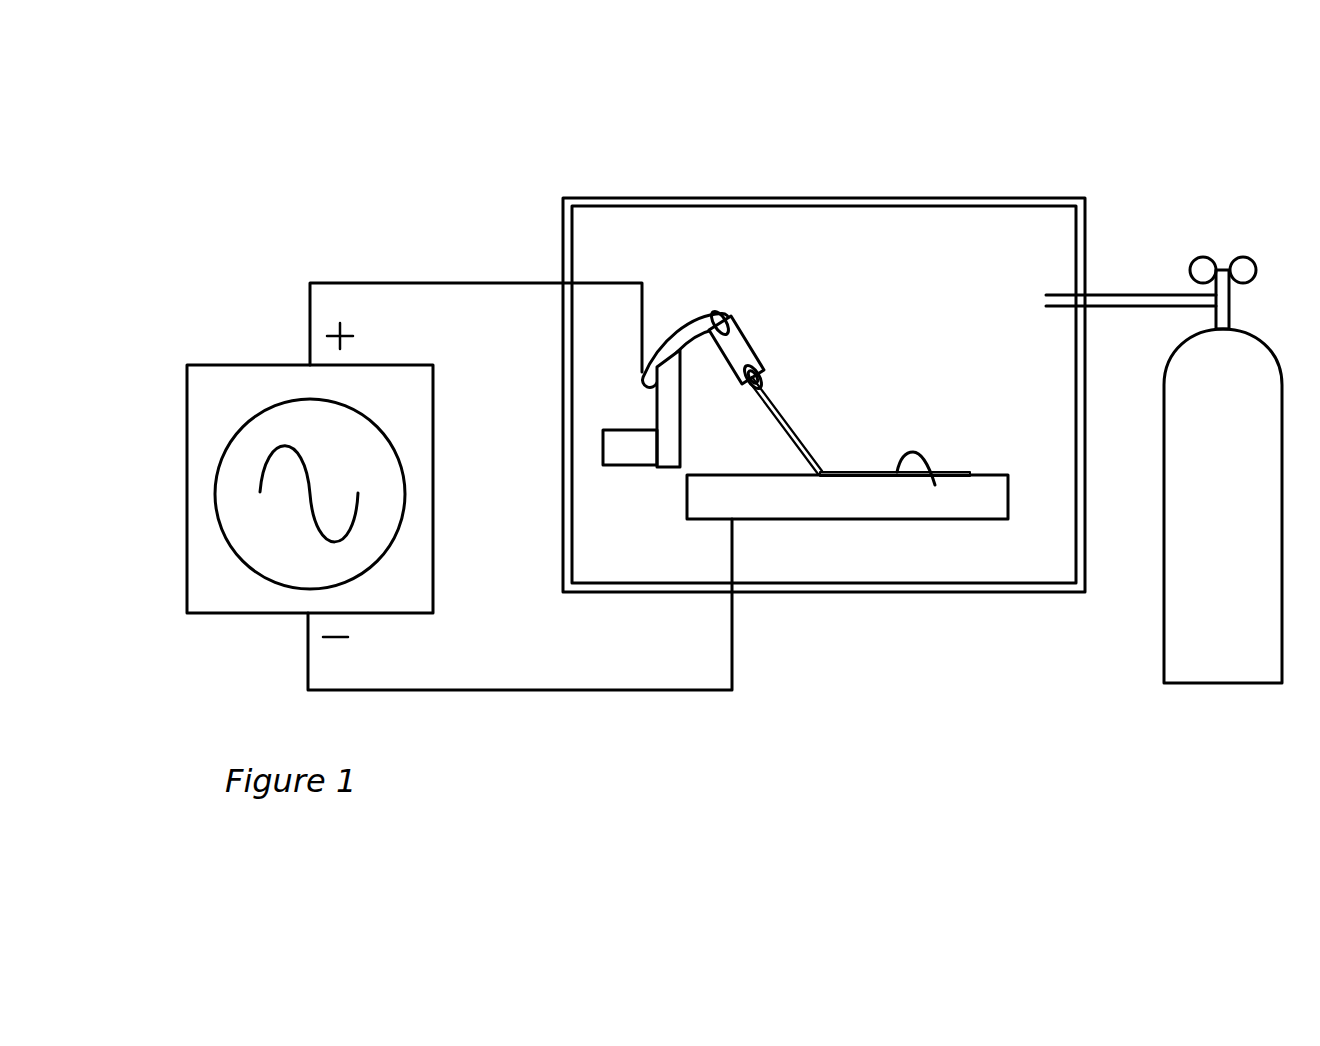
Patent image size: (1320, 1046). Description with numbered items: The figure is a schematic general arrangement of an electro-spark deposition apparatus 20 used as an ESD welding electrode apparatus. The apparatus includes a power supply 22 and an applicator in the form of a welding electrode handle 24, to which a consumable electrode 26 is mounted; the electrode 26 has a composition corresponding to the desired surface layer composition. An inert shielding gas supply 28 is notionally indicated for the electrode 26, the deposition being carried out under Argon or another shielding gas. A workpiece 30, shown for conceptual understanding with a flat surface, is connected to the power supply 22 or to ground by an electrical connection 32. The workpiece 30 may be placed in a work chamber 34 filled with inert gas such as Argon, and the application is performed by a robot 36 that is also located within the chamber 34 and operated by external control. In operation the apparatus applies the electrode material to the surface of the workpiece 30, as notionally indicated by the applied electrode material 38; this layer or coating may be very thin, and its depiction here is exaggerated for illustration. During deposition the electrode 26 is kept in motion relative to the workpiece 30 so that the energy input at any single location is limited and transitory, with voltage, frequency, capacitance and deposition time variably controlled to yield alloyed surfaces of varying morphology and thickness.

The electro-spark deposition apparatus 20 is at (322, 154).
The power supply 22 is at (270, 385).
The welding electrode handle 24 is at (700, 318).
The electrode 26 is at (787, 415).
The inert shielding gas supply 28 is at (1205, 589).
The workpiece 30 is at (858, 500).
The electrical connection 32 is at (732, 660).
The work chamber 34 is at (895, 199).
The robot 36 is at (633, 453).
The applied electrode material 38 is at (935, 485).